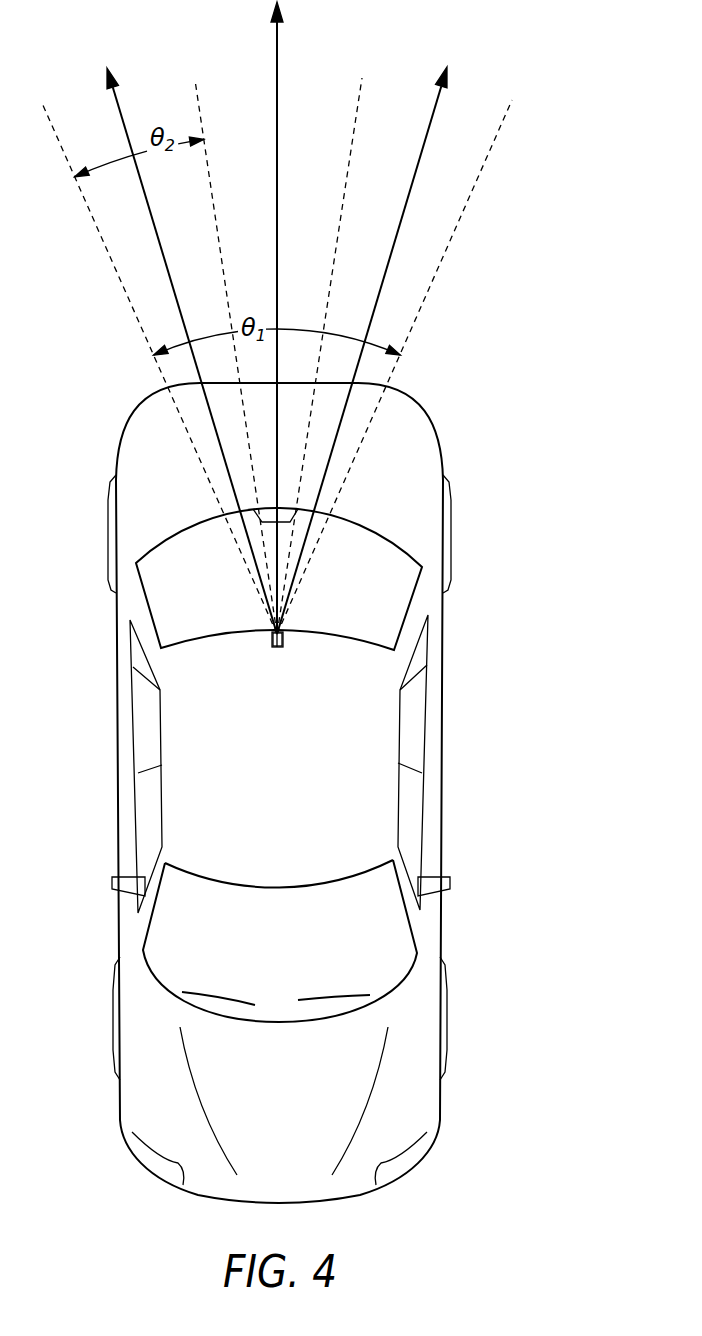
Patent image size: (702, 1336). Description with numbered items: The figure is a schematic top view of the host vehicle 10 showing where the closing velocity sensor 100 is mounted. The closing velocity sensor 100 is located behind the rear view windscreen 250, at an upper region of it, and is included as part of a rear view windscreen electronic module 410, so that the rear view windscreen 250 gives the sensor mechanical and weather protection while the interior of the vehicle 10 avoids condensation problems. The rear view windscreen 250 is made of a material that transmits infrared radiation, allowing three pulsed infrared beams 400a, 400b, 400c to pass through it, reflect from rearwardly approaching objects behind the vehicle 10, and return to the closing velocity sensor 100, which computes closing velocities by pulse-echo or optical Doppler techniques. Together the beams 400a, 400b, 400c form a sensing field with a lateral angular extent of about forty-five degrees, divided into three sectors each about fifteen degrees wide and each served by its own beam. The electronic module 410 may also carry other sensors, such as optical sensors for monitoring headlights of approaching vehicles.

The host vehicle 10 is at (412, 707).
The closing velocity sensor 100 is at (280, 648).
The rear view windscreen 250 is at (365, 553).
The first pulsed infrared beam 400a is at (115, 98).
The second pulsed infrared beam 400b is at (278, 44).
The third pulsed infrared beam 400c is at (440, 100).
The rear view windscreen electronic module 410 is at (268, 640).